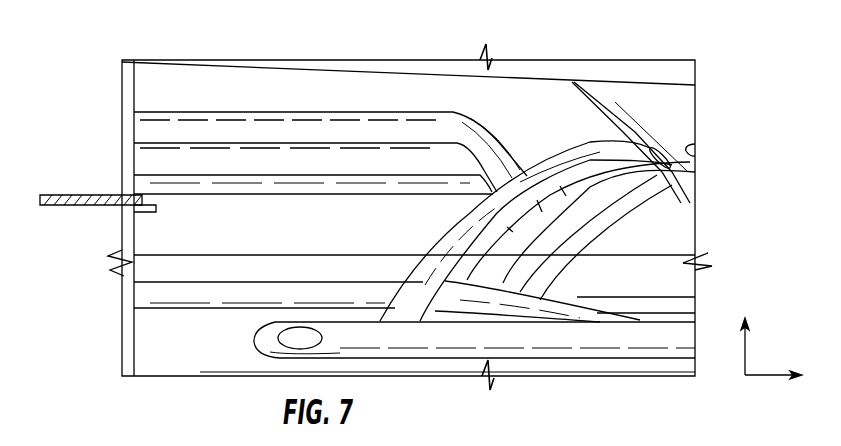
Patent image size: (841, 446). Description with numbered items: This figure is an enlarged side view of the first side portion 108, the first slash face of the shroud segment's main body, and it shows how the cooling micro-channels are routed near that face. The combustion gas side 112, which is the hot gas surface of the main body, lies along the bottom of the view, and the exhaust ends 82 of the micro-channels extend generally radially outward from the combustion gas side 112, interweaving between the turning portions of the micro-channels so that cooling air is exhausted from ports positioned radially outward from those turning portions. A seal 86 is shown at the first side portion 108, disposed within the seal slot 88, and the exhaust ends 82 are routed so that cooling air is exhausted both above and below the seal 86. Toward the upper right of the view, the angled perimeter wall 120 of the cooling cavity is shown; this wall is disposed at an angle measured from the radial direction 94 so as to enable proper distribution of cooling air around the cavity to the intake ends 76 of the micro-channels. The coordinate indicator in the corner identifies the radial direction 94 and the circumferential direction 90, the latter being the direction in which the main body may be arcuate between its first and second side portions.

The exhaust ends 82 is at (152, 161).
The seal 86 is at (72, 195).
The seal slot 88 is at (147, 203).
The first side portion 108 is at (130, 245).
The angled perimeter wall 120 is at (657, 100).
The intake ends 76 is at (655, 153).
The combustion gas side 112 is at (548, 378).
The radial direction 94 is at (748, 322).
The circumferential direction 90 is at (776, 362).